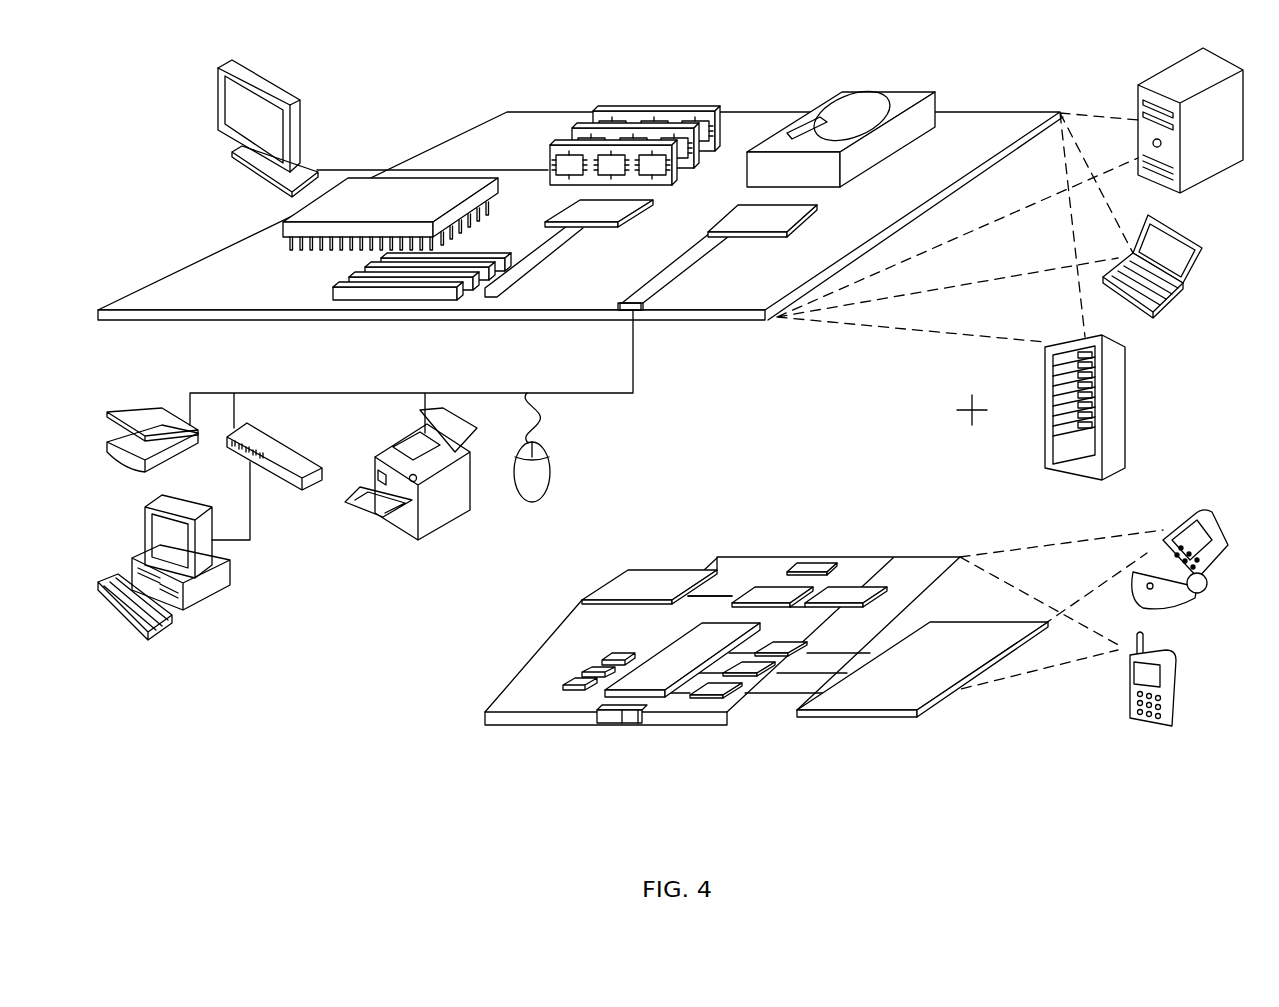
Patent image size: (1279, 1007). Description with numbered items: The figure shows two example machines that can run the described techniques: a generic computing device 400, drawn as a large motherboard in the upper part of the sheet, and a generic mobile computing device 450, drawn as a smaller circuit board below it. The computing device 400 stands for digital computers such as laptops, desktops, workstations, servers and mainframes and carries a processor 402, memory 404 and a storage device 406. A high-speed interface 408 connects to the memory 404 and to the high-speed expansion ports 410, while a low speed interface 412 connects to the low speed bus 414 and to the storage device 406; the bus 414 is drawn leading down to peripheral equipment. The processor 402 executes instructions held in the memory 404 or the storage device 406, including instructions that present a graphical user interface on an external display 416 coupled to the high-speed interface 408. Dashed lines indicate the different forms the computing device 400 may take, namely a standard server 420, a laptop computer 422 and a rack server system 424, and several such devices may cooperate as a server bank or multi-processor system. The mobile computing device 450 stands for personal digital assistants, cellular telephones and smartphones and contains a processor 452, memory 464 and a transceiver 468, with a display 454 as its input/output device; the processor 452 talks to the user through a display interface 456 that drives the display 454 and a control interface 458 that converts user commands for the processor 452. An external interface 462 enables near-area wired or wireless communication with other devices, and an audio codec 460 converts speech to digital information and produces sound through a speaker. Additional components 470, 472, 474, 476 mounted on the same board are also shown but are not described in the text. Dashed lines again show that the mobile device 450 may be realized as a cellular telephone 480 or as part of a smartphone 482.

The computing device 400 is at (409, 89).
The processor 402 is at (285, 228).
The memory 404 is at (597, 108).
The storage device 406 is at (834, 93).
The high-speed interface 408 is at (575, 212).
The high-speed expansion ports 410 is at (355, 287).
The low speed interface 412 is at (745, 213).
The low speed bus 414 is at (645, 318).
The display 416 is at (220, 68).
The standard server 420 is at (1138, 100).
The laptop computer 422 is at (1200, 244).
The rack server system 424 is at (1045, 430).
The mobile computing device 450 is at (463, 719).
The processor 452 is at (657, 682).
The display 454 is at (885, 698).
The display interface 456 is at (722, 692).
The control interface 458 is at (753, 668).
The audio codec 460 is at (782, 647).
The external interface 462 is at (622, 723).
The memory 464 is at (580, 674).
The transceiver 468 is at (848, 592).
The sensor chip 470 is at (818, 562).
The substrate layer 472 is at (690, 572).
The power management module 474 is at (625, 572).
The baseband chip 476 is at (772, 593).
The cellular telephone 480 is at (1180, 515).
The smartphone 482 is at (1122, 682).